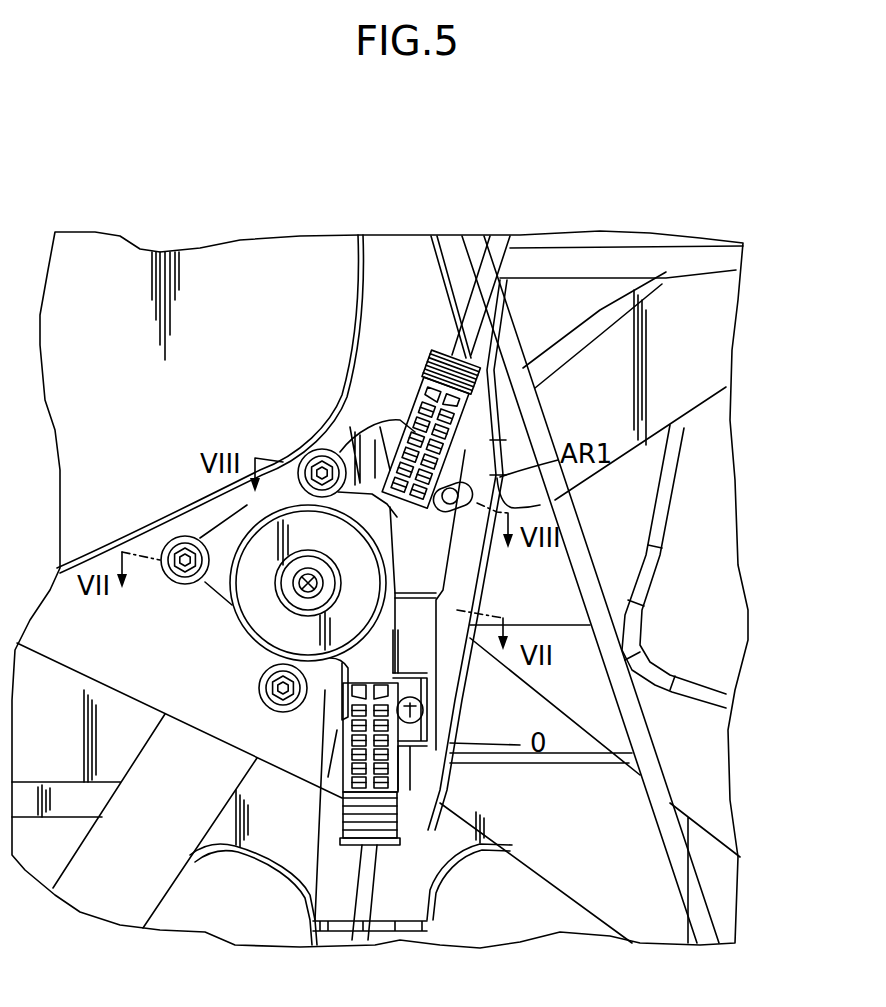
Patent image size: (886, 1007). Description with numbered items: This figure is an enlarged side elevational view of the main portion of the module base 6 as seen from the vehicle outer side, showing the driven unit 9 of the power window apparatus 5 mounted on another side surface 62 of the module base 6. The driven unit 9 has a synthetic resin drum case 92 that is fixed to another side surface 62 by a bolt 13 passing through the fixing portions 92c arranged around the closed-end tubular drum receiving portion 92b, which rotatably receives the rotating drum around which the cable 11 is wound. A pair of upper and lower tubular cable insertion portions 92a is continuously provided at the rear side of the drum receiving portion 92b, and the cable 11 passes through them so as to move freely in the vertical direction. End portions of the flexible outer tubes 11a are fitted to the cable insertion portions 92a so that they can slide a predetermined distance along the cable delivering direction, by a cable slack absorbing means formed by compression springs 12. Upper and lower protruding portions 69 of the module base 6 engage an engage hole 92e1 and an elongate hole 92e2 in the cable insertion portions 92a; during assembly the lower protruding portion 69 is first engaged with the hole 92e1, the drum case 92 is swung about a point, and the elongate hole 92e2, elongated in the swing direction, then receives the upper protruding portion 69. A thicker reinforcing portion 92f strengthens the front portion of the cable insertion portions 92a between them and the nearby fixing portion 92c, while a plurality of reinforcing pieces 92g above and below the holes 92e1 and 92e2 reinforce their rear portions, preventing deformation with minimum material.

The power window apparatus 5 is at (553, 630).
The module base 6 is at (733, 349).
The driven unit 9 is at (450, 583).
The cable 11 is at (468, 307).
The outer tube 11a is at (370, 905).
The compression spring 12 is at (423, 367).
The bolt 13 is at (307, 457).
The another side surface 62 is at (534, 387).
The protruding portion 69 is at (473, 480).
The drum case 92 is at (247, 505).
The cable insertion portion 92a is at (415, 400).
The drum receiving portion 92b is at (227, 607).
The fixing portion 92c is at (317, 450).
The engage hole 92e1 is at (423, 707).
The elongate hole 92e2 is at (477, 503).
The reinforcing portion 92f is at (373, 467).
The reinforcing piece 92g is at (460, 457).